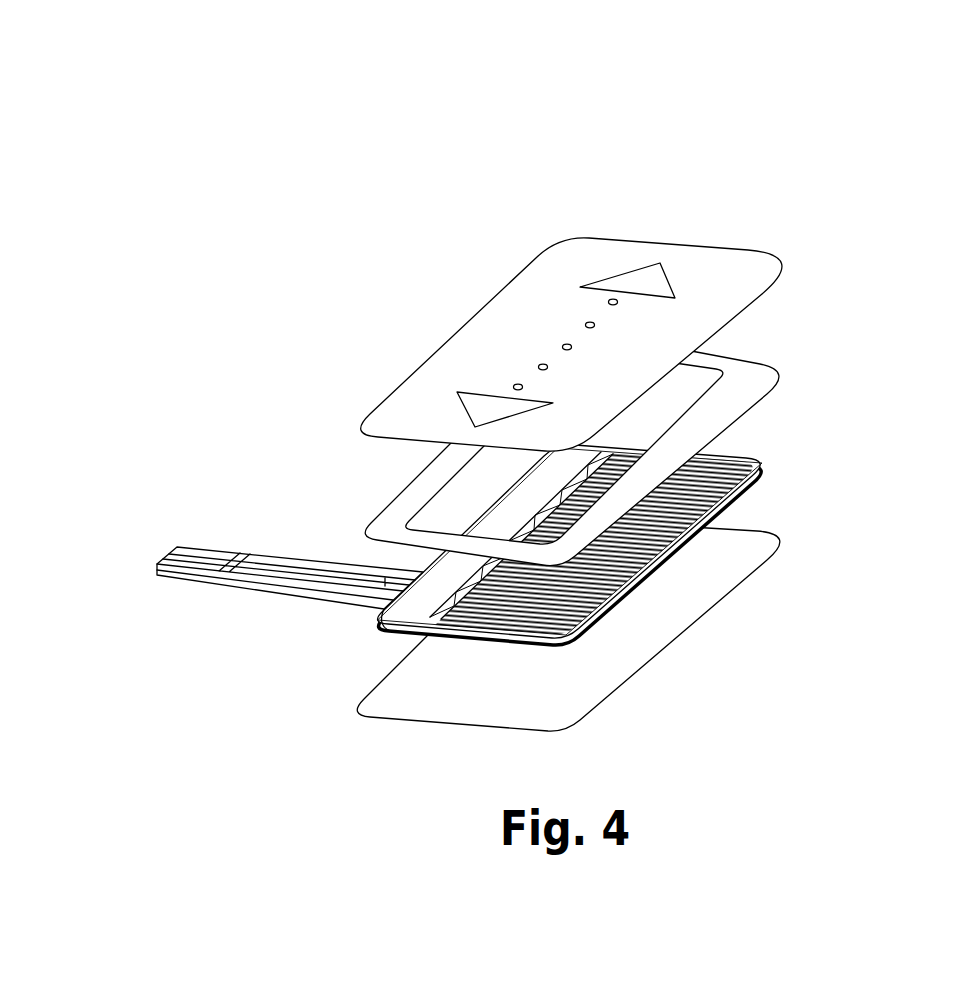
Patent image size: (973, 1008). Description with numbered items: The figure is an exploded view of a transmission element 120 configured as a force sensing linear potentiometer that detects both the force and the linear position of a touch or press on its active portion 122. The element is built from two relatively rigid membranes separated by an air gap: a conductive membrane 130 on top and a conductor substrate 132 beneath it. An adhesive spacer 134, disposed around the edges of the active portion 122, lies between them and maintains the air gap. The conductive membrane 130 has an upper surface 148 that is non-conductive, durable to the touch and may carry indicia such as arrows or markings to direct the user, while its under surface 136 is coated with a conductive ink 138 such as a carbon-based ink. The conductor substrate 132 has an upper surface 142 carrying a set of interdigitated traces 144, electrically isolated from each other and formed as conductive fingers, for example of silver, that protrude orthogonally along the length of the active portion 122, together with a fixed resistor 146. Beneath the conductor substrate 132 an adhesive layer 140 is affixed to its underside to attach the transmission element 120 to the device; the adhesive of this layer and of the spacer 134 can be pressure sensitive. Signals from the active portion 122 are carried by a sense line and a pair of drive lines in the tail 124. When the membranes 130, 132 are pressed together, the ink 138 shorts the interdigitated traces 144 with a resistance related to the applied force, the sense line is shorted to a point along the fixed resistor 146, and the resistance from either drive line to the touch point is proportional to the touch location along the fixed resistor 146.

The transmission element 120 is at (810, 160).
The active portion 122 is at (605, 200).
The tail 124 is at (267, 610).
The conductive membrane 130 is at (680, 237).
The conductor substrate 132 is at (770, 463).
The adhesive spacer 134 is at (750, 357).
The under surface 136 is at (760, 300).
The conductive ink 138 is at (387, 433).
The adhesive layer 140 is at (653, 663).
The upper surface 142 is at (740, 453).
The interdigitated traces 144 is at (513, 600).
The fixed resistor 146 is at (377, 610).
The upper surface 148 is at (531, 295).